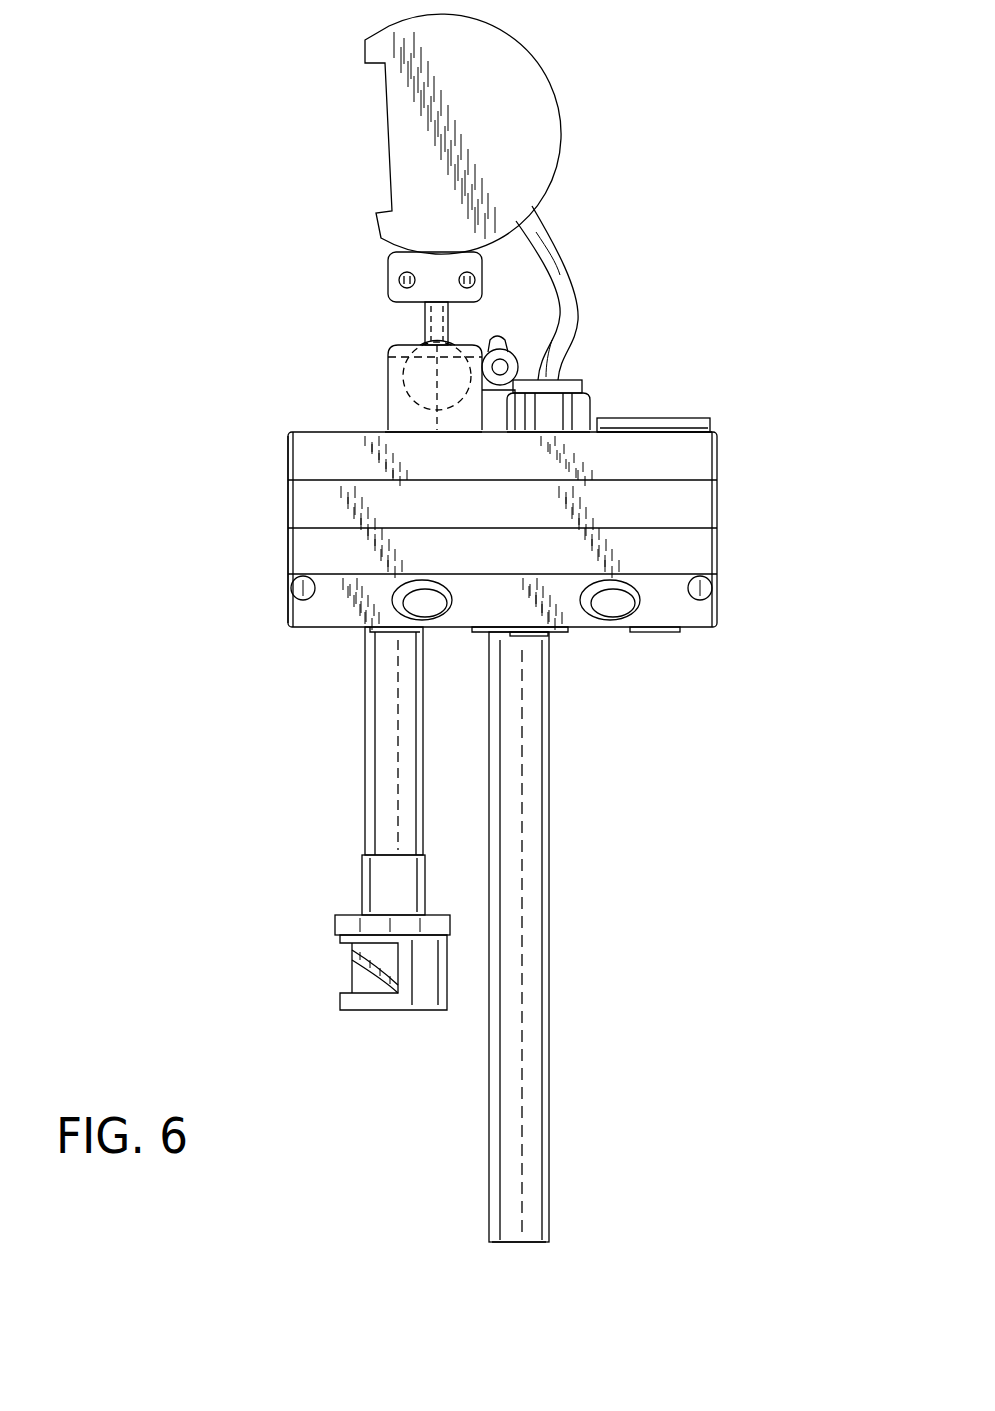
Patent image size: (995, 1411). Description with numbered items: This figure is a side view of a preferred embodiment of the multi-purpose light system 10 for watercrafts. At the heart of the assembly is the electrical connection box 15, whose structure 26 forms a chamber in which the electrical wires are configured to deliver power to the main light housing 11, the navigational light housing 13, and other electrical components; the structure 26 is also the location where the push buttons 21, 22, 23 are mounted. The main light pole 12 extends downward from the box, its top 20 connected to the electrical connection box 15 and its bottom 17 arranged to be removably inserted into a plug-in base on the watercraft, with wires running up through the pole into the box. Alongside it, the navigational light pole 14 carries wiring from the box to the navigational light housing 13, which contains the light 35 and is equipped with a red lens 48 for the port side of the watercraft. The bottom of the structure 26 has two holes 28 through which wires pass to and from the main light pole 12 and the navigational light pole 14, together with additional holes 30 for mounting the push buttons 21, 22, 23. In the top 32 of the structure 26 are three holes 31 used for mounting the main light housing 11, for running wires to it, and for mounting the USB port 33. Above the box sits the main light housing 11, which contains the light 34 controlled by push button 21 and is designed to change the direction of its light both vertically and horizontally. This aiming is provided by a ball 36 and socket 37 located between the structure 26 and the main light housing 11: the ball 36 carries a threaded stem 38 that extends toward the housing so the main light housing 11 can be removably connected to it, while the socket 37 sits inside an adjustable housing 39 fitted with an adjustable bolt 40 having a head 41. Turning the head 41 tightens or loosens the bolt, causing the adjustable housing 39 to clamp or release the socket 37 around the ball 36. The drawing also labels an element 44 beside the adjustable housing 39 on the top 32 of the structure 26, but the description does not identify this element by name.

The multi-purpose light system 10 is at (210, 92).
The main light housing 11 is at (423, 134).
The main light pole 12 is at (584, 957).
The navigational light housing 13 is at (343, 1015).
The navigational light pole 14 is at (365, 755).
The electrical connection box 15 is at (531, 562).
The structure 26 is at (503, 562).
The bottom of the main light pole 17 is at (535, 1242).
The top of the main light pole 20 is at (545, 636).
The push button 21 is at (440, 625).
The push button 22 is at (610, 625).
The push button 23 is at (665, 635).
The holes 28 is at (385, 640).
The additional holes 30 is at (680, 632).
The holes 31 is at (386, 430).
The top of the structure 32 is at (305, 432).
The USB port 33 is at (668, 418).
The light 34 is at (388, 137).
The light 35 is at (352, 957).
The ball 36 is at (437, 410).
The socket 37 is at (470, 352).
The threaded stem 38 is at (420, 322).
The adjustable housing 39 is at (394, 398).
The adjustable bolt 40 is at (556, 339).
The head 41 is at (508, 340).
The nut 44 is at (550, 397).
The red lens 48 is at (365, 985).